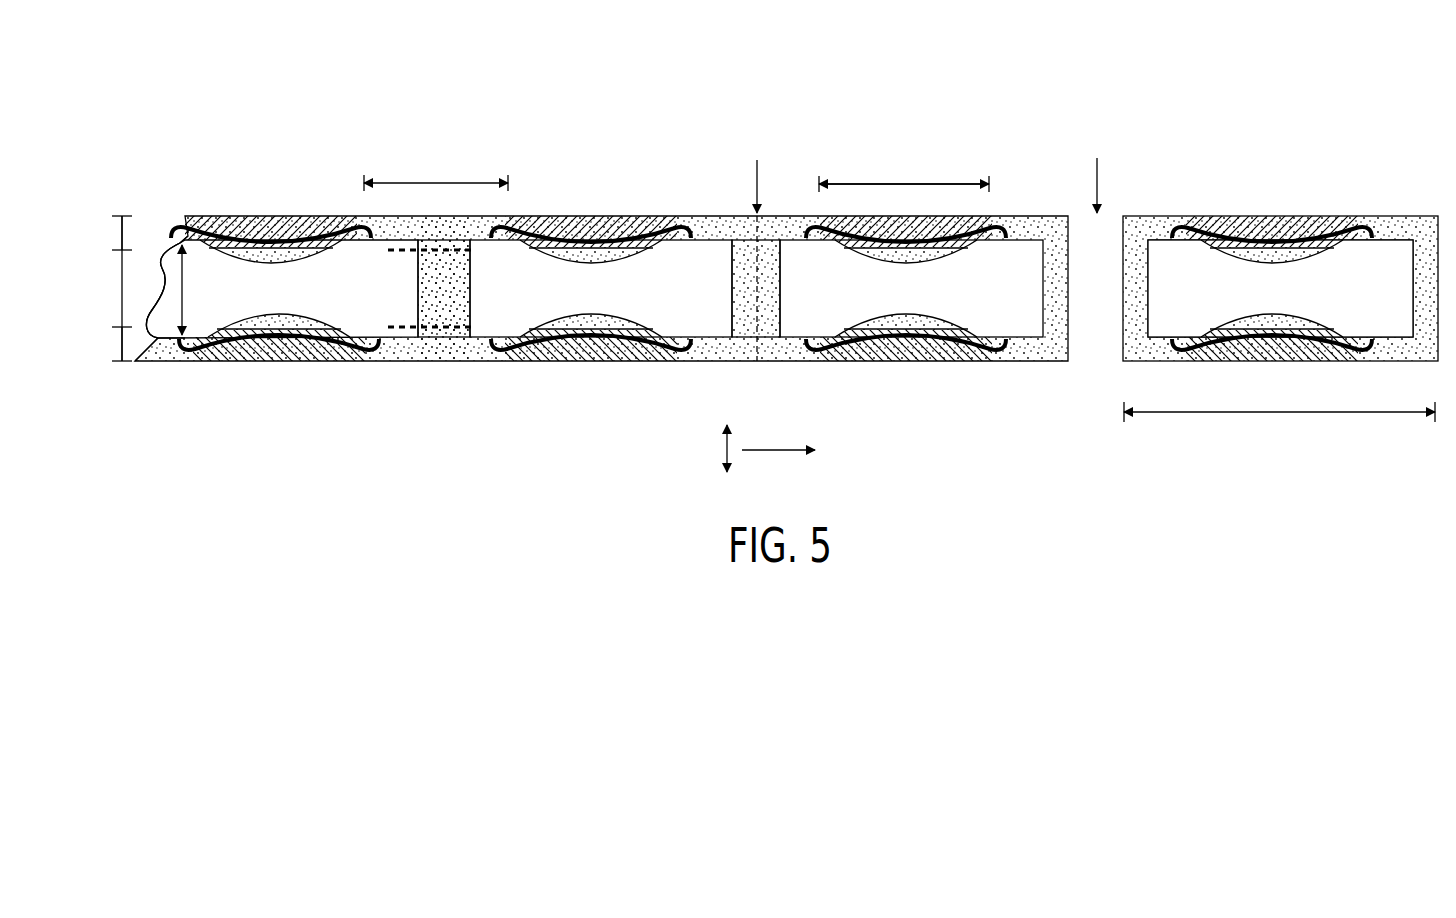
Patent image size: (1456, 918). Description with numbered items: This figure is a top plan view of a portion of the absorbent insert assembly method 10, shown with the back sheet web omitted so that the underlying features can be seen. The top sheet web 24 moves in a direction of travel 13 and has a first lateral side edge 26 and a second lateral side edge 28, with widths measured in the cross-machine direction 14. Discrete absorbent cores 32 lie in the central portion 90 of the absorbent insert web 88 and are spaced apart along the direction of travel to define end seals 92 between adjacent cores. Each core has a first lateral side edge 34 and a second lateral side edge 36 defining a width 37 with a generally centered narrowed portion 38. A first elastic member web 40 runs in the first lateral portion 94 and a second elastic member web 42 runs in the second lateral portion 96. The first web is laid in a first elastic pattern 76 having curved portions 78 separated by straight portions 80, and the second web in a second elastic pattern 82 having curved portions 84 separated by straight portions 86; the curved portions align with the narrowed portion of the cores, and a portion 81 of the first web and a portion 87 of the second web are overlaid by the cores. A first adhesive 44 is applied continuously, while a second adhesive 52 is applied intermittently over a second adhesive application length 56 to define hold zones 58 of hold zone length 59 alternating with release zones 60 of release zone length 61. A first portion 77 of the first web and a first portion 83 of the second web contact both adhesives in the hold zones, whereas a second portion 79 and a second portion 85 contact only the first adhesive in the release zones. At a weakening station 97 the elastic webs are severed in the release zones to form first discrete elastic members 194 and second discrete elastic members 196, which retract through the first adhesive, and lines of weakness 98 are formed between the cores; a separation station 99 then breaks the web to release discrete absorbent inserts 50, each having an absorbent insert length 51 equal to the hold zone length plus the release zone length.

The absorbent insert assembly method 10 is at (634, 72).
The direction of travel 13 is at (794, 449).
The cross-machine direction 14 is at (724, 450).
The top sheet web 24 is at (160, 362).
The first lateral side edge 26 is at (195, 235).
The second lateral side edge 28 is at (178, 362).
The discrete absorbent cores 32 is at (779, 289).
The first lateral side edge 34 is at (175, 245).
The second lateral side edge 36 is at (210, 328).
The absorbent core width 37 is at (186, 282).
The narrowed portion 38 is at (305, 258).
The first elastic member web 40 is at (210, 232).
The second elastic member web 42 is at (200, 362).
The first adhesive 44 is at (465, 337).
The discrete absorbent inserts 50 is at (1368, 160).
The absorbent insert length 51 is at (1300, 412).
The second adhesive 52 is at (612, 216).
The second adhesive application length 56 is at (878, 184).
The hold zones 58 is at (310, 240).
The hold zone length 59 is at (935, 184).
The release zones 60 is at (485, 216).
The release zone length 61 is at (428, 183).
The first elastic pattern 76 is at (242, 236).
The first portion of the first elastic member web 77 is at (645, 216).
The curved portions 78 is at (276, 228).
The second portion of the first elastic member web 79 is at (395, 215).
The straight portions 80 is at (200, 238).
The overlaid portion of the first elastic member web 81 is at (393, 250).
The second elastic pattern 82 is at (260, 345).
The first portion of the second elastic member web 83 is at (620, 350).
The curved portions 84 is at (318, 362).
The second portion of the second elastic member web 85 is at (445, 335).
The straight portions 86 is at (388, 355).
The overlaid portion of the second elastic member web 87 is at (398, 327).
The absorbent insert web 88 is at (519, 126).
The central portion 90 is at (118, 292).
The end seals 92 is at (455, 287).
The first lateral portion 94 is at (118, 238).
The second lateral portion 96 is at (118, 346).
The weakening station 97 is at (757, 162).
The lines of weakness 98 is at (760, 345).
The separation station 99 is at (1098, 175).
The first discrete elastic members 194 is at (838, 226).
The second discrete elastic members 196 is at (850, 352).